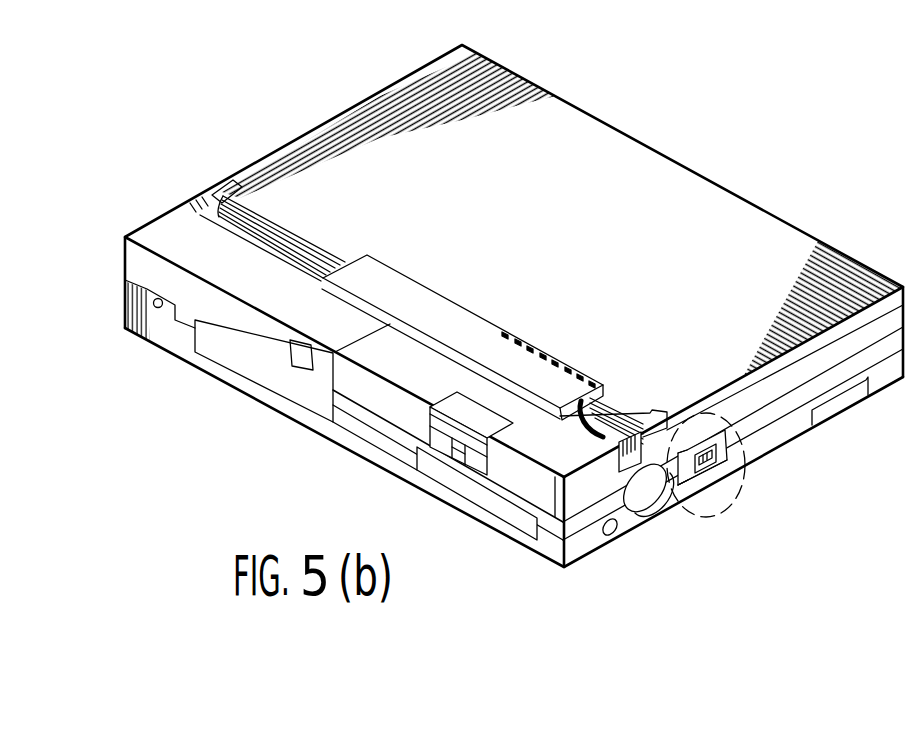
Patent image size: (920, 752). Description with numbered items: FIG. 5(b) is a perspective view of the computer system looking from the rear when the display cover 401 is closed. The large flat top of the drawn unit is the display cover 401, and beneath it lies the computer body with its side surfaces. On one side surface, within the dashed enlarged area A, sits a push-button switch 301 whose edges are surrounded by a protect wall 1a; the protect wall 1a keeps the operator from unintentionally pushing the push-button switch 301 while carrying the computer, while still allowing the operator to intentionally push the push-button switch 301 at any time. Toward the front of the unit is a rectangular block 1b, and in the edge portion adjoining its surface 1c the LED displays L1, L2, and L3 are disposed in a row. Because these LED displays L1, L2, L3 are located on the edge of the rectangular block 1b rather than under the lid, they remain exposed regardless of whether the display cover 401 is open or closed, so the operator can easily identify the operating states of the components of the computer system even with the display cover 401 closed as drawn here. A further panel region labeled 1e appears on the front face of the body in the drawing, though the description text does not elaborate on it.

The display cover 401 is at (733, 200).
The surface of rectangular block 1c is at (400, 278).
The rectangular block 1b is at (352, 330).
The front panel 1e is at (291, 392).
The protect wall 1a is at (737, 429).
The push-button switch 301 is at (732, 470).
The LED display L1 is at (593, 393).
The LED display L2 is at (581, 378).
The LED display L3 is at (565, 365).
The enlarged area A is at (682, 520).